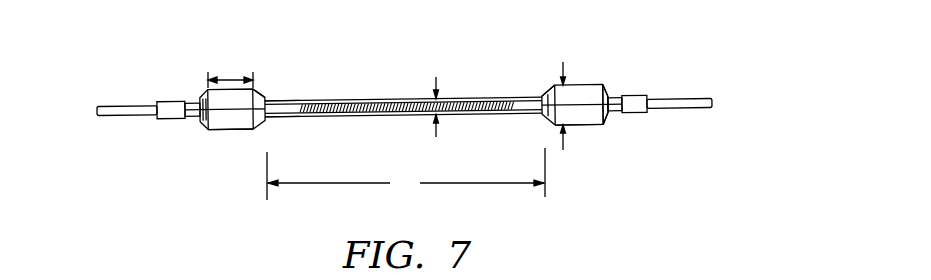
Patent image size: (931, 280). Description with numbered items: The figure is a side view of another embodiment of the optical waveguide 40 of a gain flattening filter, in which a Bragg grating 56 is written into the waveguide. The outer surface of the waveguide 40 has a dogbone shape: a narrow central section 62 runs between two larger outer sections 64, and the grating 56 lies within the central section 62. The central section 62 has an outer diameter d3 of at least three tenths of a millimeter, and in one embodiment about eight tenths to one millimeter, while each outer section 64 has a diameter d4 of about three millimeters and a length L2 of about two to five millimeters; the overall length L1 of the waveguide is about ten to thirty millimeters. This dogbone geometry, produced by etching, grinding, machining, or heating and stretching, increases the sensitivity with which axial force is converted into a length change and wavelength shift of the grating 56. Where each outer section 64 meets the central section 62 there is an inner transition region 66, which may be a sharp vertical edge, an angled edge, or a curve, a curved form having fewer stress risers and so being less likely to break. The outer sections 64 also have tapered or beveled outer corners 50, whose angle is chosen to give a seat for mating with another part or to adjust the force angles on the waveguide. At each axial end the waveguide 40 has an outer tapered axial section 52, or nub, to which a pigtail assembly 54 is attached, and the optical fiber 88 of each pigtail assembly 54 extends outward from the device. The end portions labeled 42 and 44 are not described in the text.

The optical waveguide 40 is at (497, 58).
The first end of tube 42 is at (285, 102).
The second housing 44 is at (590, 93).
The tapered outer corners 50 is at (203, 124).
The tapered axial section 52 is at (195, 103).
The pigtail assembly 54 is at (173, 133).
The grating 56 is at (372, 101).
The central section 62 is at (502, 116).
The outer sections 64 is at (223, 133).
The inner transition region 66 is at (264, 100).
The optical fiber 88 is at (110, 104).
The outer diameter of central section d3 is at (440, 118).
The diameter of outer sections d4 is at (568, 84).
The overall length L1 is at (406, 174).
The length of outer sections L2 is at (232, 75).